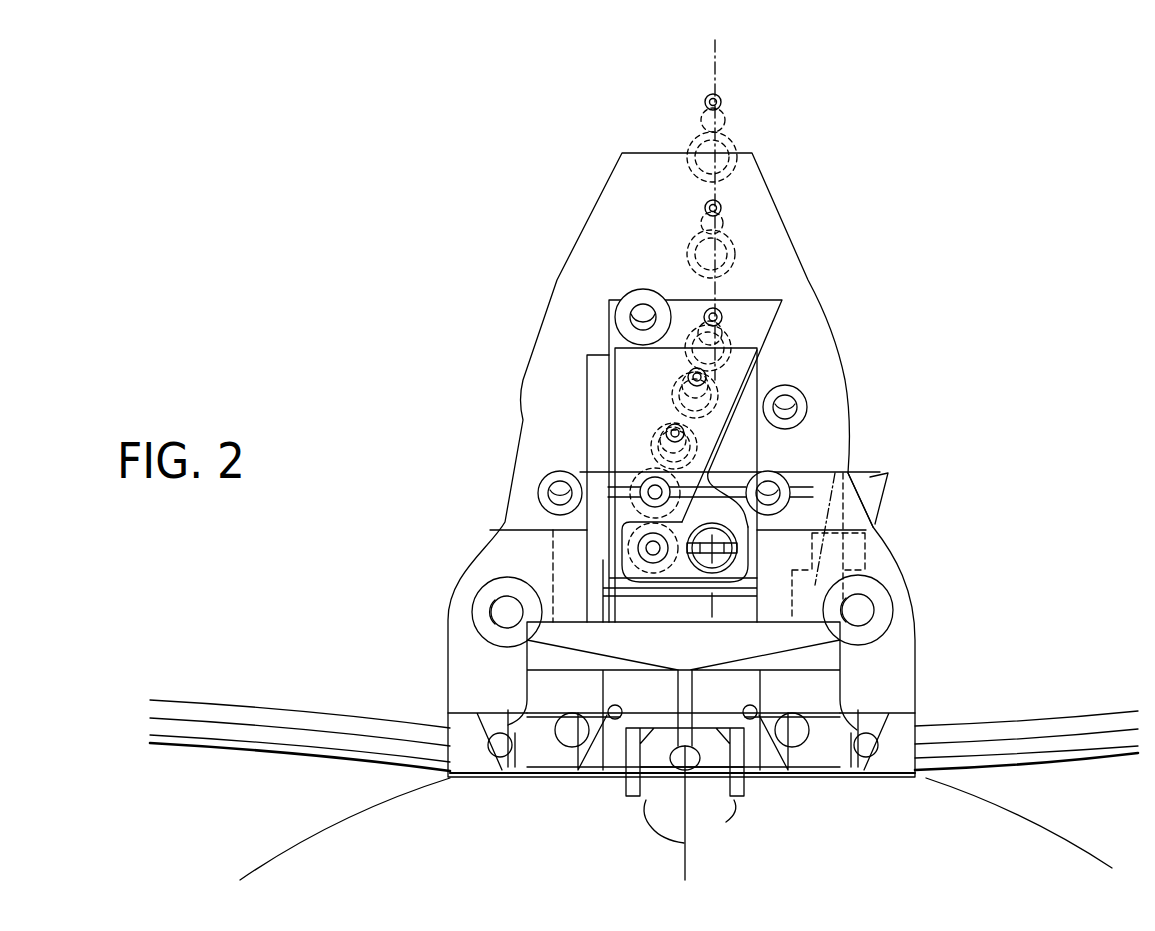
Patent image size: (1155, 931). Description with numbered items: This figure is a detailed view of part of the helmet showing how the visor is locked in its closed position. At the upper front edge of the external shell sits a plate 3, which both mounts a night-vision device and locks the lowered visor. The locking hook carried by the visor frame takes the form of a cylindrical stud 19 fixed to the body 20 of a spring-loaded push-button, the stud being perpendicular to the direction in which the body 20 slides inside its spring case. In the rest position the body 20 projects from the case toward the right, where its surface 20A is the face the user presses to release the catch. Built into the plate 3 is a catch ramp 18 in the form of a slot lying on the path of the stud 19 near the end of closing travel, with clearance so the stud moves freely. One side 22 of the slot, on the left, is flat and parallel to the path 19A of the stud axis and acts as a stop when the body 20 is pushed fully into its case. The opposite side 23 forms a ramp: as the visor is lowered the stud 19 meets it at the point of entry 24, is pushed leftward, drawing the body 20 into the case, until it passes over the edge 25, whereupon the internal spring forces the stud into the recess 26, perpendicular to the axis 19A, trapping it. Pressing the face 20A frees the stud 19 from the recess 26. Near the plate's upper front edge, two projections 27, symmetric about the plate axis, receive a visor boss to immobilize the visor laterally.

The plate 3 is at (432, 597).
The catch ramp 18 is at (732, 442).
The cylindrical stud 19 is at (720, 242).
The path of the axis of the stud 19A is at (718, 52).
The body of the push-button 20 is at (878, 472).
The surface of the body 20A is at (880, 517).
The side of the slot 22 is at (608, 406).
The opposite side of the slot 23 is at (750, 360).
The point of entry 24 is at (738, 390).
The edge 25 is at (690, 510).
The recess 26 is at (730, 525).
The projections 27 is at (684, 843).